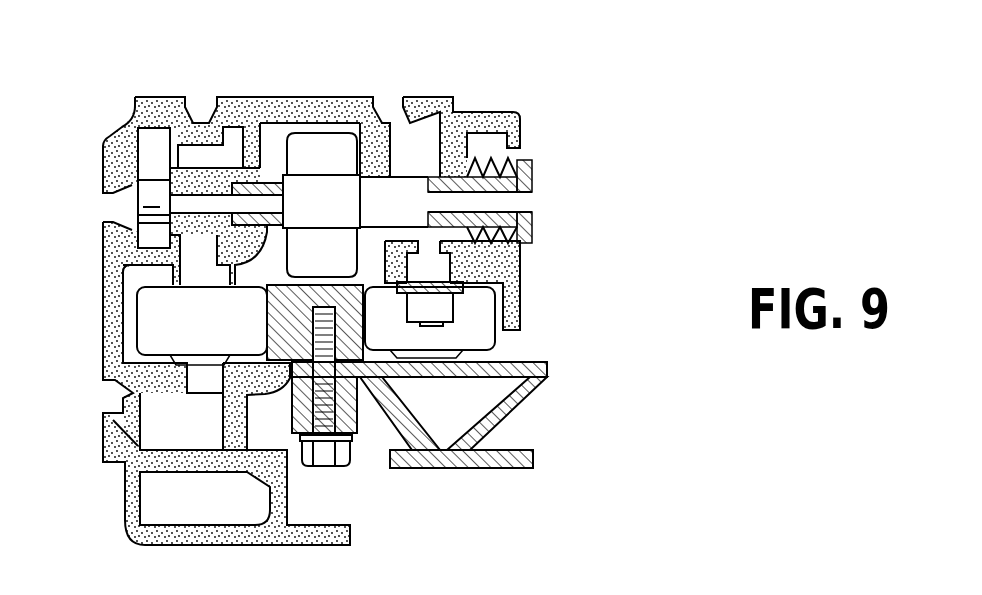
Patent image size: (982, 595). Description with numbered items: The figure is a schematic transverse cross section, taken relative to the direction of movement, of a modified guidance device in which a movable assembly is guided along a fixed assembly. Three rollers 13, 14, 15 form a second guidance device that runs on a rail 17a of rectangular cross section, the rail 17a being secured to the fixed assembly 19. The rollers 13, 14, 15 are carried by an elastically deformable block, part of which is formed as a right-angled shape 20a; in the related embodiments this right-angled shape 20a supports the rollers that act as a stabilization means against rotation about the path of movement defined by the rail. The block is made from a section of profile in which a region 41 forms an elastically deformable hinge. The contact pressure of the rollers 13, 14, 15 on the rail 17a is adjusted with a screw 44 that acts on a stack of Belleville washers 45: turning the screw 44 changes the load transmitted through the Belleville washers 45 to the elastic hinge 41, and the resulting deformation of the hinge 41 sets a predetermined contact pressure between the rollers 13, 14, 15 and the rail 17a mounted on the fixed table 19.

The roller 13 is at (160, 321).
The roller 14 is at (318, 138).
The roller 15 is at (471, 338).
The rail of rectangular cross section 17a is at (353, 318).
The fixed table 19 is at (548, 366).
The right-angled shape 20a is at (545, 262).
The region forming elastically deformable hinge 41 is at (453, 100).
The screw 44 is at (523, 221).
The assembly of Belleville washers 45 is at (508, 163).